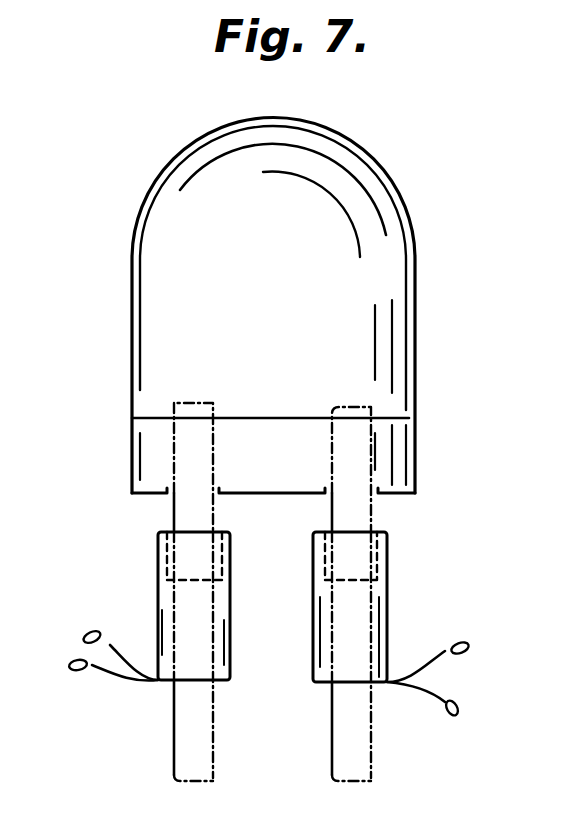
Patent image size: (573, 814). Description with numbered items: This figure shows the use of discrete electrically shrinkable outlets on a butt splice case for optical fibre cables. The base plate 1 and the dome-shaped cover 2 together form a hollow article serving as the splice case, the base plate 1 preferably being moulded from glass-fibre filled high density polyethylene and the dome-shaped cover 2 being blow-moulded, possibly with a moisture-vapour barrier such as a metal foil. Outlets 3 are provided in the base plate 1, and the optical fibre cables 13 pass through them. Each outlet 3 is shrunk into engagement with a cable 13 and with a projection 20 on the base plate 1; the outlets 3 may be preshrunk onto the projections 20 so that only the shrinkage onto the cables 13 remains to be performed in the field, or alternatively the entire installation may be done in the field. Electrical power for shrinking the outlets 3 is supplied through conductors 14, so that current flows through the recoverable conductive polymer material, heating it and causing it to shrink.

The base plate 1 is at (155, 458).
The dome-shaped cover 2 is at (348, 327).
The outlets 3 is at (157, 583).
The optical fibre cables 13 is at (170, 733).
The conductors 14 is at (103, 672).
The projections 20 is at (170, 516).